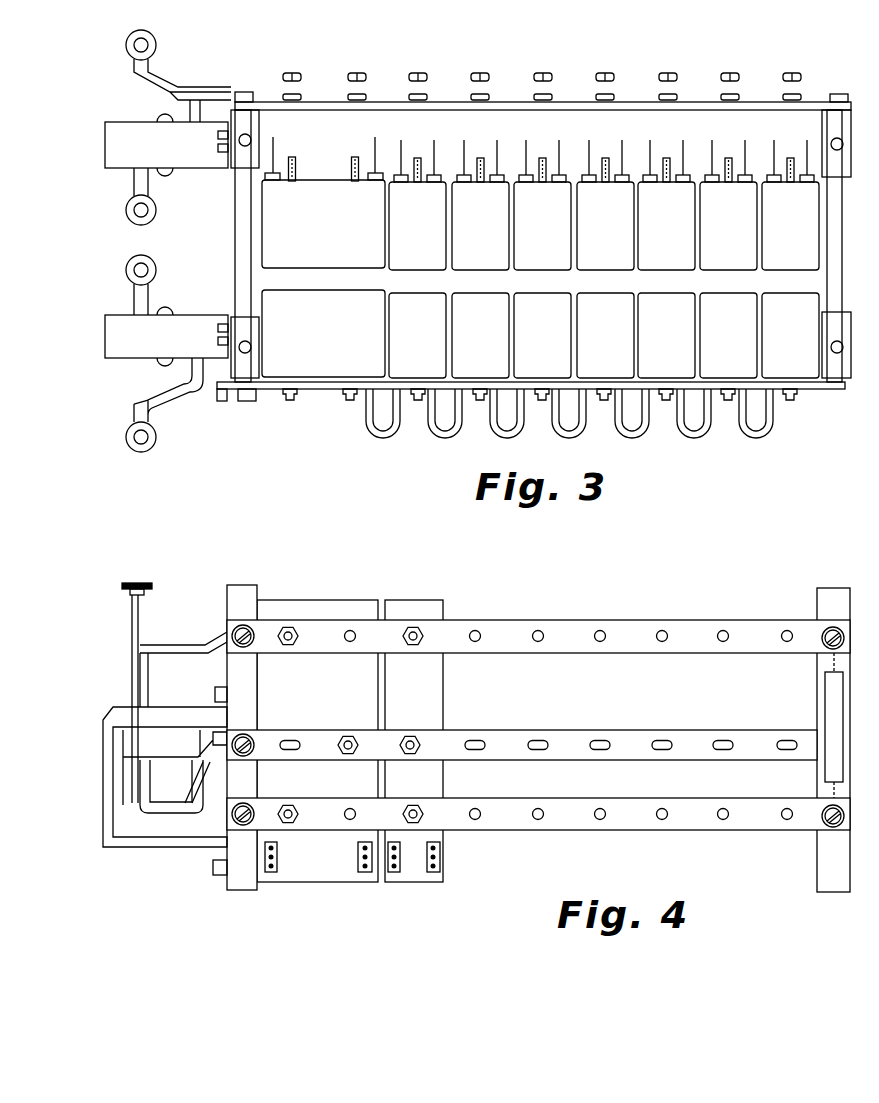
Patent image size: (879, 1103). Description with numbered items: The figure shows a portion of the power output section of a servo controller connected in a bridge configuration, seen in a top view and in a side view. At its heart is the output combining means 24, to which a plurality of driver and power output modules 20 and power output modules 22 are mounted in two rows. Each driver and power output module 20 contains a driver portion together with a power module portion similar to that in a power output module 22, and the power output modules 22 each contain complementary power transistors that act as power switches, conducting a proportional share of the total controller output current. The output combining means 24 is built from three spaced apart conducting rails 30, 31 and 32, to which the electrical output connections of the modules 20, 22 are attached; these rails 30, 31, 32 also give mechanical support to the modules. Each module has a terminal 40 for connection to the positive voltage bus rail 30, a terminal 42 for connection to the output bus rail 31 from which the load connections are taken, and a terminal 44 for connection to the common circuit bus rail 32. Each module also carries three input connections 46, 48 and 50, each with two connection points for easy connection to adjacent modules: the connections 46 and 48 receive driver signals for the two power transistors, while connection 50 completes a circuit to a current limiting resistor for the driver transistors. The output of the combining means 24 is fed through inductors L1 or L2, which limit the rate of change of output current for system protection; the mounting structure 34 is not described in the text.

In FIG. 3, the driver and power output module 20 is at (271, 300).
In FIG. 3, the power output module 22 is at (534, 185).
In FIG. 3, the output combining means 24 is at (332, 389).
In FIG. 3, the inductor L1 is at (146, 120).
In FIG. 3, the inductor L2 is at (147, 350).
In FIG. 4, the conducting rail 30 is at (641, 621).
In FIG. 4, the conducting rail 31 is at (577, 730).
In FIG. 4, the conducting rail 32 is at (635, 830).
In FIG. 4, the mounting bracket and pin 34 is at (125, 708).
In FIG. 4, the terminal 40 is at (410, 640).
In FIG. 4, the terminal 42 is at (398, 745).
In FIG. 4, the terminal 44 is at (412, 803).
In FIG. 4, the input connection 46 is at (458, 847).
In FIG. 4, the input connection 48 is at (433, 866).
In FIG. 4, the input connection 50 is at (434, 875).